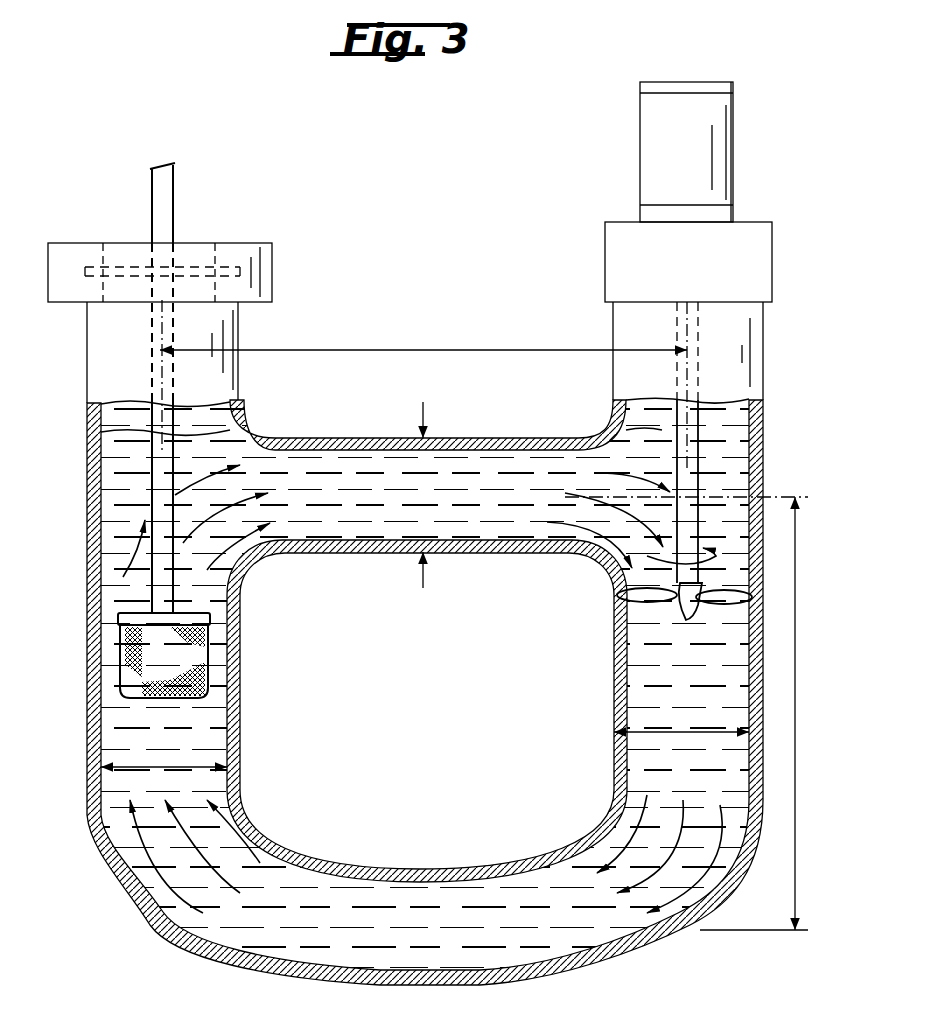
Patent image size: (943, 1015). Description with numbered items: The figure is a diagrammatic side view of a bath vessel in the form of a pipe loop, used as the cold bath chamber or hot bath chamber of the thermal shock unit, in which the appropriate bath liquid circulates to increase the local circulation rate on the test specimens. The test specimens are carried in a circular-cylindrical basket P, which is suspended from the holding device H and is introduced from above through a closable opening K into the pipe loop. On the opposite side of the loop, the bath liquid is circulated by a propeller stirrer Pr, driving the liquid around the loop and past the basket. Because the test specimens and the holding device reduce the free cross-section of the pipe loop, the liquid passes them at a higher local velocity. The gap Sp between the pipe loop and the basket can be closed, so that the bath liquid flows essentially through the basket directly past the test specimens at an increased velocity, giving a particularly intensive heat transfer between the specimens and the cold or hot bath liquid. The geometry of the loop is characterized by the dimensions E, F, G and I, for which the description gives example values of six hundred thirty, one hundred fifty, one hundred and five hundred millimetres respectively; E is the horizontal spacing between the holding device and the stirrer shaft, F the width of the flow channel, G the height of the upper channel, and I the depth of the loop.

The closable opening K is at (127, 247).
The holding device H is at (165, 205).
The geometrical parameter of the pipe loop E is at (410, 350).
The geometrical parameter of the pipe loop G is at (423, 510).
The gap Sp is at (115, 633).
The basket P is at (148, 680).
The geometrical parameter of the pipe loop F is at (193, 762).
The propeller stirrer Pr is at (637, 601).
The geometrical parameter of the pipe loop I is at (688, 713).